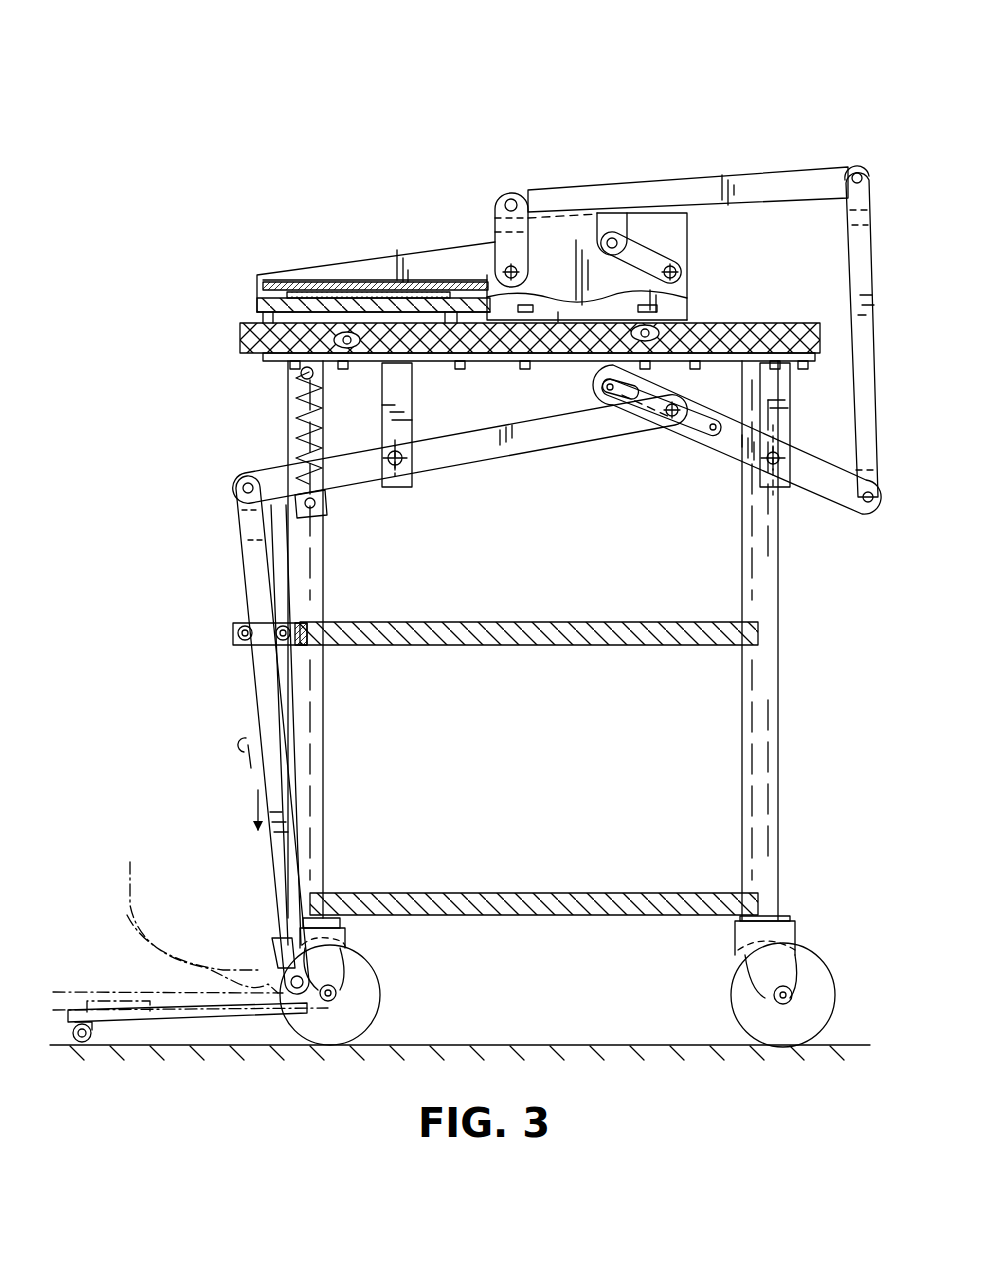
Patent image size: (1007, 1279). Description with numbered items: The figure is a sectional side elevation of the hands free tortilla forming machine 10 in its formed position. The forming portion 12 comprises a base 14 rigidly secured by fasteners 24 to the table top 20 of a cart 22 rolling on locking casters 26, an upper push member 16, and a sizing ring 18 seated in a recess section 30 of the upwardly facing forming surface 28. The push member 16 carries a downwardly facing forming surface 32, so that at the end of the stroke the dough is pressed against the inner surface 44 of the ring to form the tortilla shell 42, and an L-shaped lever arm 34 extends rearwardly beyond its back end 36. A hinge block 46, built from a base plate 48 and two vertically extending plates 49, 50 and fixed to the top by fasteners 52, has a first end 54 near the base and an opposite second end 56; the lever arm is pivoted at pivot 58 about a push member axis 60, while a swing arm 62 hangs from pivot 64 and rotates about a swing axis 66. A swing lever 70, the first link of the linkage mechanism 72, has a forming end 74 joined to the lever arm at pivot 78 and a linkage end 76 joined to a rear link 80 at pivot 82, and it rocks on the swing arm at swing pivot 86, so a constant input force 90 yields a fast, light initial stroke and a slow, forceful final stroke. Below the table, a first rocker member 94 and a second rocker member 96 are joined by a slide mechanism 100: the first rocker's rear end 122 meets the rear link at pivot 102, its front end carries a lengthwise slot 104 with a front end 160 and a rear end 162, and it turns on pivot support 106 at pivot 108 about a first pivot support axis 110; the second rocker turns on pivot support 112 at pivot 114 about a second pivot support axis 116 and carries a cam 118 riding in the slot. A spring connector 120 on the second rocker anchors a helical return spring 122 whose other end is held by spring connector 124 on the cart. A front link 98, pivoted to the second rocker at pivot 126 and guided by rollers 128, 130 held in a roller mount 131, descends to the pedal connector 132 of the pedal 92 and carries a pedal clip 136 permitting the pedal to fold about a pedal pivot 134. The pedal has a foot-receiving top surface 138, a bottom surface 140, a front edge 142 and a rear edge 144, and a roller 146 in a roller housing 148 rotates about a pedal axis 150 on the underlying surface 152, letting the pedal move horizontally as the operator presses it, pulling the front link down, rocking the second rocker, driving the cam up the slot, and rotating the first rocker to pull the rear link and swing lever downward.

The tortilla forming machine 10 is at (350, 76).
The forming portion 12 is at (318, 247).
The base 14 is at (253, 310).
The upper push member 16 is at (263, 277).
The sizing ring 18 is at (300, 293).
The table top 20 is at (243, 333).
The cart 22 is at (790, 756).
The fasteners 24 is at (270, 363).
The locking casters 26 is at (818, 967).
The upwardly facing forming surface 28 is at (277, 293).
The recess section 30 is at (365, 275).
The downwardly facing forming surface 32 is at (263, 297).
The lever arm 34 is at (447, 250).
The back end 36 is at (465, 362).
The tortilla shell 42 is at (337, 292).
The inner surface 44 is at (425, 322).
The hinge block 46 is at (660, 200).
The base plate 48 is at (558, 312).
The vertically extending plate 49 is at (680, 225).
The vertically extending plate 50 is at (680, 300).
The fasteners 52 is at (527, 370).
The first end 54 is at (493, 283).
The second end 56 is at (687, 291).
The pivot 58 is at (512, 272).
The push member axis 60 is at (512, 272).
The swing arm 62 is at (640, 258).
The pivot 64 is at (838, 262).
The swing axis 66 is at (670, 272).
The swing lever 70 is at (778, 175).
The linkage mechanism 72 is at (803, 560).
The forming end 74 is at (528, 195).
The linkage end 76 is at (867, 168).
The pivot 78 is at (510, 207).
The rear link 80 is at (852, 247).
The pivot 82 is at (850, 170).
The swing pivot 86 is at (612, 240).
The input force 90 is at (240, 1000).
The pedal 92 is at (172, 1019).
The first rocker member 94 is at (727, 449).
The second rocker member 96 is at (482, 455).
The front link 98 is at (260, 685).
The slide mechanism 100 is at (645, 435).
The pivot 102 is at (870, 510).
The lengthwise slot 104 is at (693, 418).
The pivot support 106 is at (783, 402).
The pivot 108 is at (767, 467).
The first pivot support axis 110 is at (777, 460).
The pivot support 112 is at (387, 427).
The pivot 114 is at (400, 463).
The second pivot support axis 116 is at (393, 463).
The cam 118 is at (677, 407).
The spring connector 120 is at (318, 512).
The return spring 122 is at (302, 427).
The spring connector 124 is at (307, 377).
The pivot 126 is at (244, 487).
The roller 128 is at (277, 623).
The roller 130 is at (238, 625).
The roller mount 131 is at (235, 633).
The pedal connector 132 is at (307, 993).
The pedal pivot 134 is at (303, 977).
The pedal clip 136 is at (250, 740).
The top surface 138 is at (152, 1007).
The bottom surface 140 is at (197, 1013).
The front edge 142 is at (73, 1007).
The rear edge 144 is at (323, 1033).
The roller 146 is at (77, 1045).
The roller housing 148 is at (93, 1033).
The pedal axis 150 is at (90, 1047).
The underlying surface 152 is at (592, 1044).
The front end 160 is at (610, 392).
The rear end 162 is at (713, 430).